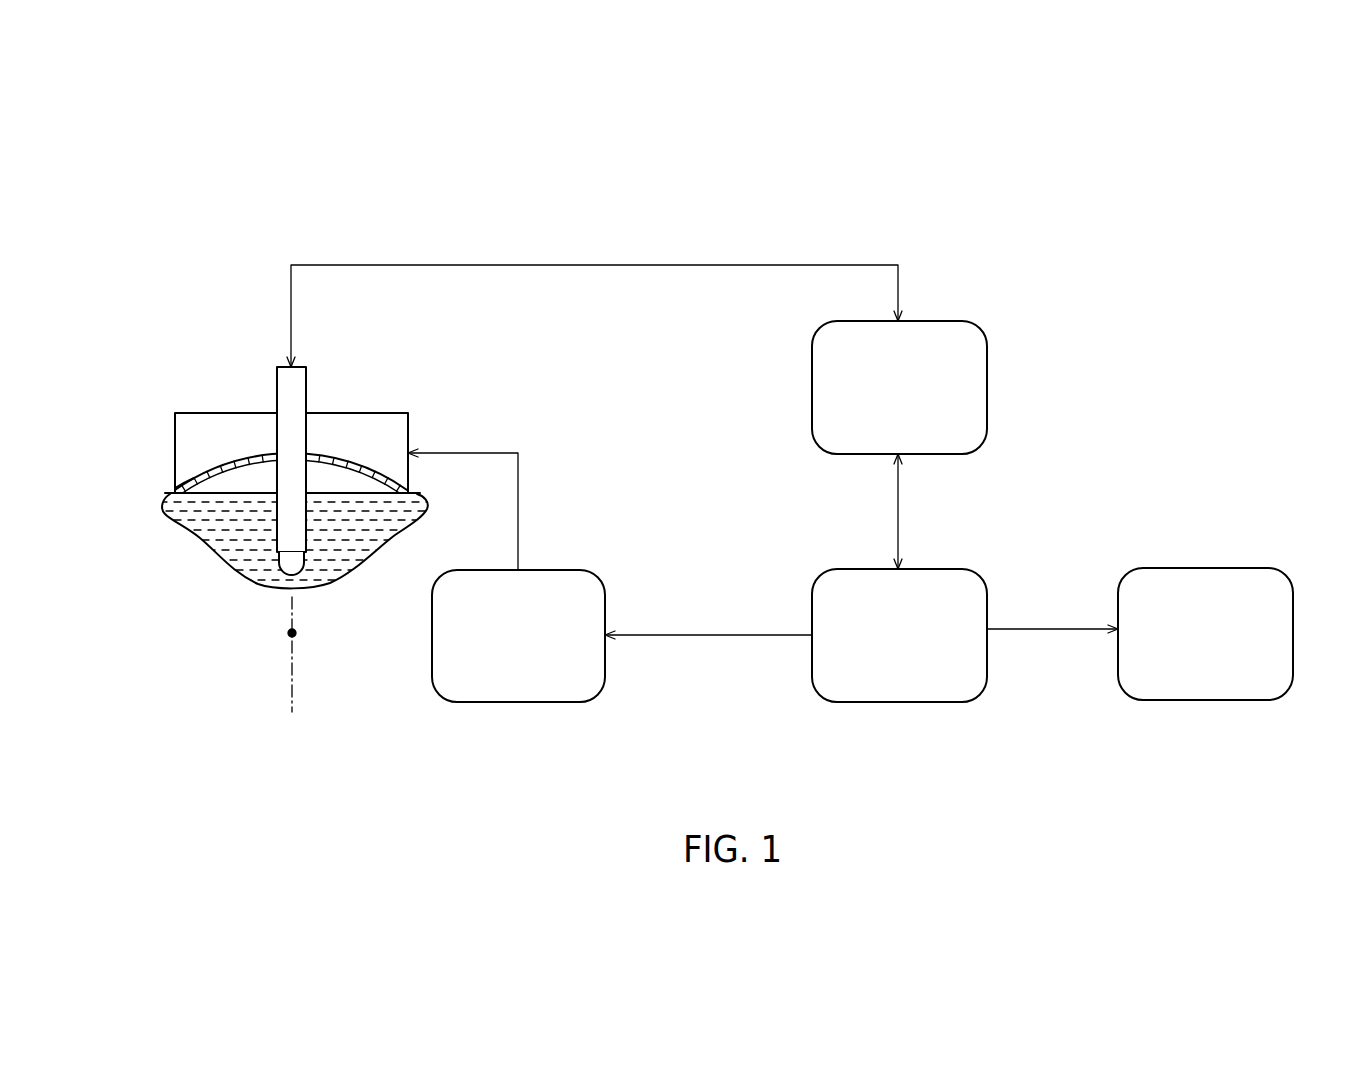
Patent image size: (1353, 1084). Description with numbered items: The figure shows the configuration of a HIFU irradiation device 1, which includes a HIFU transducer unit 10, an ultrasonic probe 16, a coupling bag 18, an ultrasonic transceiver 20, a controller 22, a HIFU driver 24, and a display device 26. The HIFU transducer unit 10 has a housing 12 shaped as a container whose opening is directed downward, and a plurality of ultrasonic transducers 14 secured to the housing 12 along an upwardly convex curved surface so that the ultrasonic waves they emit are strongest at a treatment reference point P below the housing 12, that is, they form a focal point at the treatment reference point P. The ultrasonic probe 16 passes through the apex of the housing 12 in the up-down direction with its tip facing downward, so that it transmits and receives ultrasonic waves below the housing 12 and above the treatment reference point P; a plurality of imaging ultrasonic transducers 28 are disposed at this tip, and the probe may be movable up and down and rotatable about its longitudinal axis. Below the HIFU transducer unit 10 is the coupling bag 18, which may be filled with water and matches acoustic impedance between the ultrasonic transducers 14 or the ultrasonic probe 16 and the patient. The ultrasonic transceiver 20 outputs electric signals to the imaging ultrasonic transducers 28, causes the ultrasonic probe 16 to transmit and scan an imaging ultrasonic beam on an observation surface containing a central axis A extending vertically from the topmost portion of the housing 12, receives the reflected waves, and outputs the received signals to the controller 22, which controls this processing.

The HIFU irradiation device 1 is at (228, 218).
The HIFU transducer unit 10 is at (217, 410).
The housing 12 is at (214, 467).
The ultrasonic transducers 14 is at (193, 481).
The ultrasonic probe 16 is at (270, 523).
The coupling bag 18 is at (238, 577).
The imaging ultrasonic transducers 28 is at (298, 562).
The central axis A is at (290, 700).
The treatment reference point P is at (294, 638).
The ultrasonic transceiver 20 is at (944, 321).
The controller 22 is at (937, 569).
The HIFU driver 24 is at (557, 570).
The display device 26 is at (1219, 568).